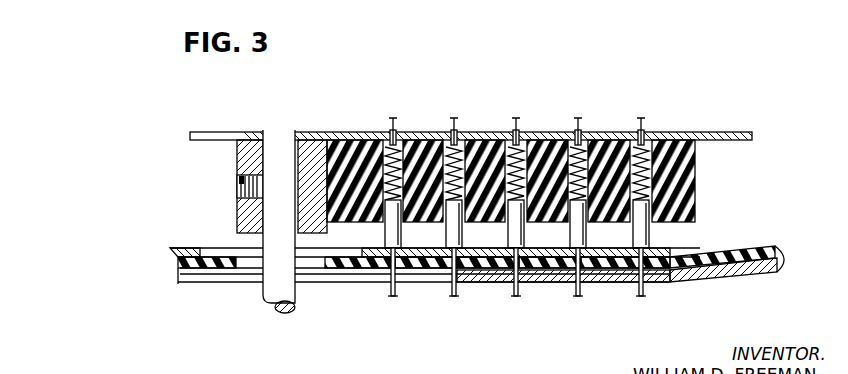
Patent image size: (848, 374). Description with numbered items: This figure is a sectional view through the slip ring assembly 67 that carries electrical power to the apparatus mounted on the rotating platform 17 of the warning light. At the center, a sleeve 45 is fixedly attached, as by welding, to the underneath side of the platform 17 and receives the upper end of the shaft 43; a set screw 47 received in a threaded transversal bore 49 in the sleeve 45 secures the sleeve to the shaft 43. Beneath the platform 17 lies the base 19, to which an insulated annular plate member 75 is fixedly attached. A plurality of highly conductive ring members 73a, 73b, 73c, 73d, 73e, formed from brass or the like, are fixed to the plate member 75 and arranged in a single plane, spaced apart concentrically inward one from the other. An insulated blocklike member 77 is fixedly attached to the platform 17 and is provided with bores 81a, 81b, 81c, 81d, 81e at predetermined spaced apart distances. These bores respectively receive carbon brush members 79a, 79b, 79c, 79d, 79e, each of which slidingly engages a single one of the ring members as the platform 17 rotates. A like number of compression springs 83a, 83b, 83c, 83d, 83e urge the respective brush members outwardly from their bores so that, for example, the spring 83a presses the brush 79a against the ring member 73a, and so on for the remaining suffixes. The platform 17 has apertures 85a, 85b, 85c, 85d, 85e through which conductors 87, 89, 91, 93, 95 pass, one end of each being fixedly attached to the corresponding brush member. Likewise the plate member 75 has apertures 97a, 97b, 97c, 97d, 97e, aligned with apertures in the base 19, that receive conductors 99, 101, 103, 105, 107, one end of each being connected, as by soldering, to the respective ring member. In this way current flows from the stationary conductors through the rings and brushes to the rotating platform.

The rotating platform 17 is at (193, 133).
The base 19 is at (205, 277).
The shaft 43 is at (277, 138).
The sleeve 45 is at (238, 217).
The set screw 47 is at (238, 190).
The threaded transversal bore 49 is at (238, 180).
The slip ring assembly 67 is at (68, 127).
The ring member 73a is at (172, 250).
The ring member 73b is at (428, 270).
The ring member 73c is at (490, 270).
The ring member 73d is at (552, 270).
The ring member 73e is at (615, 270).
The insulated annular plate member 75 is at (178, 262).
The insulated blocklike member 77 is at (690, 195).
The brush member 79a is at (385, 233).
The brush member 79b is at (446, 233).
The brush member 79c is at (508, 233).
The brush member 79d is at (570, 233).
The brush member 79e is at (633, 233).
The bore 81a is at (425, 140).
The bore 81b is at (488, 140).
The bore 81c is at (548, 140).
The bore 81d is at (607, 140).
The bore 81e is at (670, 140).
The compression spring 83a is at (380, 132).
The compression spring 83b is at (470, 132).
The compression spring 83c is at (535, 132).
The compression spring 83d is at (595, 132).
The compression spring 83e is at (660, 132).
The aperture 85a is at (386, 132).
The aperture 85b is at (450, 132).
The aperture 85c is at (518, 132).
The aperture 85d is at (580, 132).
The aperture 85e is at (658, 132).
The conductor 87 is at (396, 128).
The conductor 89 is at (458, 128).
The conductor 91 is at (520, 128).
The conductor 93 is at (576, 128).
The conductor 95 is at (640, 128).
The aperture 97a is at (389, 284).
The aperture 97b is at (450, 284).
The aperture 97c is at (513, 284).
The aperture 97d is at (576, 284).
The aperture 97e is at (641, 284).
The conductor 99 is at (396, 300).
The conductor 101 is at (456, 300).
The conductor 103 is at (516, 300).
The conductor 105 is at (578, 300).
The conductor 107 is at (640, 300).